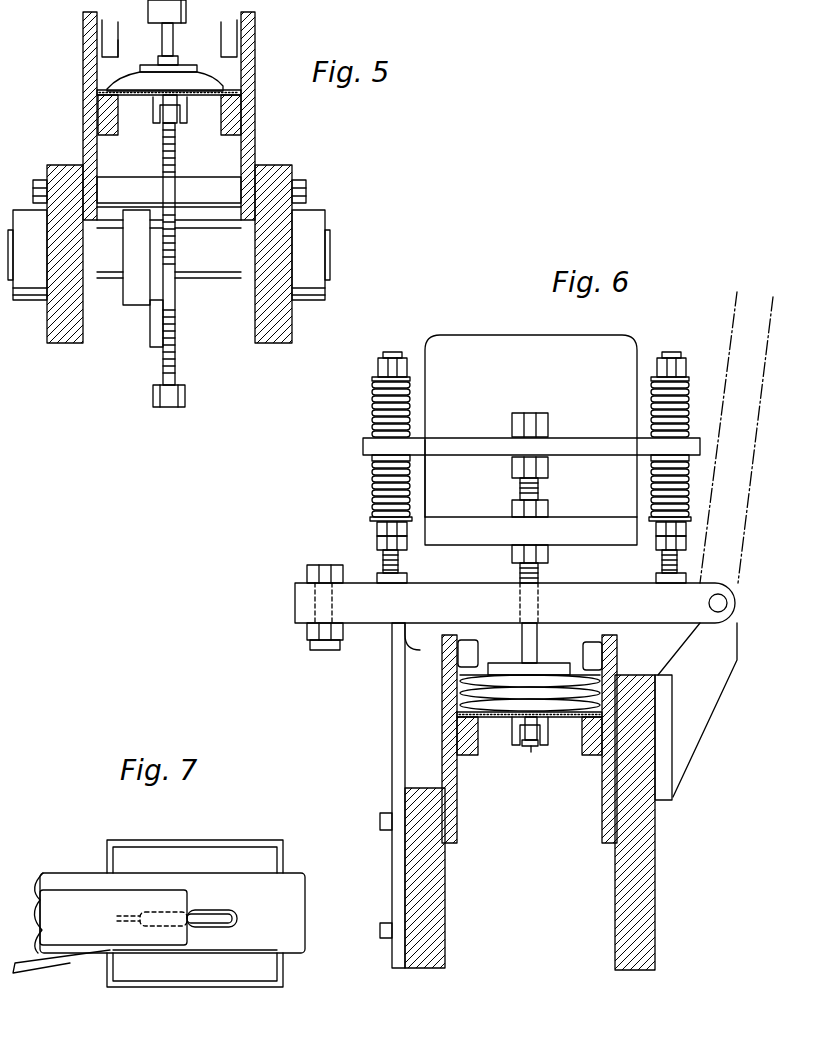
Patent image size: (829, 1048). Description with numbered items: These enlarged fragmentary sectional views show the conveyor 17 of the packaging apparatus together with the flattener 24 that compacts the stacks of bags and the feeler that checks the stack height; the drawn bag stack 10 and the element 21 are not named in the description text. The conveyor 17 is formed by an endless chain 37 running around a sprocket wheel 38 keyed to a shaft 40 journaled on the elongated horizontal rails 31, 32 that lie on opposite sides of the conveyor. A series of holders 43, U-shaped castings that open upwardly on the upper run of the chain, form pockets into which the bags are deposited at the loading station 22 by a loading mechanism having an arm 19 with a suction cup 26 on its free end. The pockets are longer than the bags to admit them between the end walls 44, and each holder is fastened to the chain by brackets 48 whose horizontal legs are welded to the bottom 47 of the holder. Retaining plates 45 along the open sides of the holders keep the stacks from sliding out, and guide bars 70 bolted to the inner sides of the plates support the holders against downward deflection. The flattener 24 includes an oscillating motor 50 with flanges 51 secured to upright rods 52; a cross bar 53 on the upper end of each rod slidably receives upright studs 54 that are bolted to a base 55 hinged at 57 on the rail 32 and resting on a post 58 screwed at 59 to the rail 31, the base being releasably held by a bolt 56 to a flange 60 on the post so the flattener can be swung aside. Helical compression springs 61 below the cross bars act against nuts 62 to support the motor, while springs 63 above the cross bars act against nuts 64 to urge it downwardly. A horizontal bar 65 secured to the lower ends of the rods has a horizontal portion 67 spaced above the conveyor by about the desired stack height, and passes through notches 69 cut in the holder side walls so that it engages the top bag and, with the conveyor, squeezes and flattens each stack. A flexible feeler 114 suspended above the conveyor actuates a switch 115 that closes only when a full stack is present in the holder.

In FIG. 5, the diaphragm / bellows 10 is at (200, 80).
In FIG. 6, the diaphragm / bellows 10 is at (506, 692).
In FIG. 7, the diaphragm / bellows 10 is at (230, 975).
In FIG. 6, the conveyor 17 is at (523, 752).
In FIG. 5, the arm 19 is at (187, 10).
In FIG. 6, the bellows top plate 21 is at (460, 681).
In FIG. 5, the loading station 22 is at (78, 32).
In FIG. 6, the flattener 24 is at (500, 326).
In FIG. 7, the flattener 24 is at (45, 872).
In FIG. 5, the suction cup 26 is at (180, 66).
In FIG. 5, the rail 31 is at (52, 336).
In FIG. 6, the rail 31 is at (446, 879).
In FIG. 5, the rail 32 is at (259, 333).
In FIG. 6, the rail 32 is at (656, 873).
In FIG. 5, the endless chain 37 is at (168, 409).
In FIG. 6, the endless chain 37 is at (533, 748).
In FIG. 5, the sprocket wheel 38 is at (149, 320).
In FIG. 5, the shaft 40 is at (210, 279).
In FIG. 5, the holder 43 is at (230, 45).
In FIG. 6, the holder 43 is at (476, 650).
In FIG. 7, the holder 43 is at (190, 985).
In FIG. 6, the end wall 44 is at (617, 652).
In FIG. 7, the end wall 44 is at (107, 975).
In FIG. 5, the retaining plate 45 is at (88, 62).
In FIG. 6, the retaining plate 45 is at (443, 700).
In FIG. 5, the bottom 47 is at (132, 98).
In FIG. 6, the bottom 47 is at (561, 717).
In FIG. 5, the bracket 48 is at (184, 108).
In FIG. 6, the bracket 48 is at (548, 745).
In FIG. 6, the oscillating motor 50 is at (480, 340).
In FIG. 6, the flange 51 is at (605, 522).
In FIG. 6, the upright rod 52 is at (539, 580).
In FIG. 6, the cross bar 53 is at (594, 447).
In FIG. 6, the upright stud 54 is at (392, 352).
In FIG. 6, the base 55 is at (295, 598).
In FIG. 6, the bolt 56 is at (302, 560).
In FIG. 6, the hinge 57 is at (728, 604).
In FIG. 6, the post 58 is at (392, 741).
In FIG. 6, the screw connection 59 is at (386, 813).
In FIG. 6, the flange 60 is at (305, 631).
In FIG. 6, the helical compression spring 61 is at (372, 491).
In FIG. 6, the nut 62 is at (377, 530).
In FIG. 6, the compression spring 63 is at (372, 409).
In FIG. 6, the nut 64 is at (378, 369).
In FIG. 6, the horizontal bar 65 is at (541, 661).
In FIG. 6, the horizontal portion 67 is at (500, 668).
In FIG. 7, the horizontal portion 67 is at (300, 906).
In FIG. 5, the notch 69 is at (118, 40).
In FIG. 5, the guide bar 70 is at (100, 108).
In FIG. 6, the guide bar 70 is at (462, 729).
In FIG. 7, the flexible feeler 114 is at (221, 911).
In FIG. 7, the switch 115 is at (178, 892).